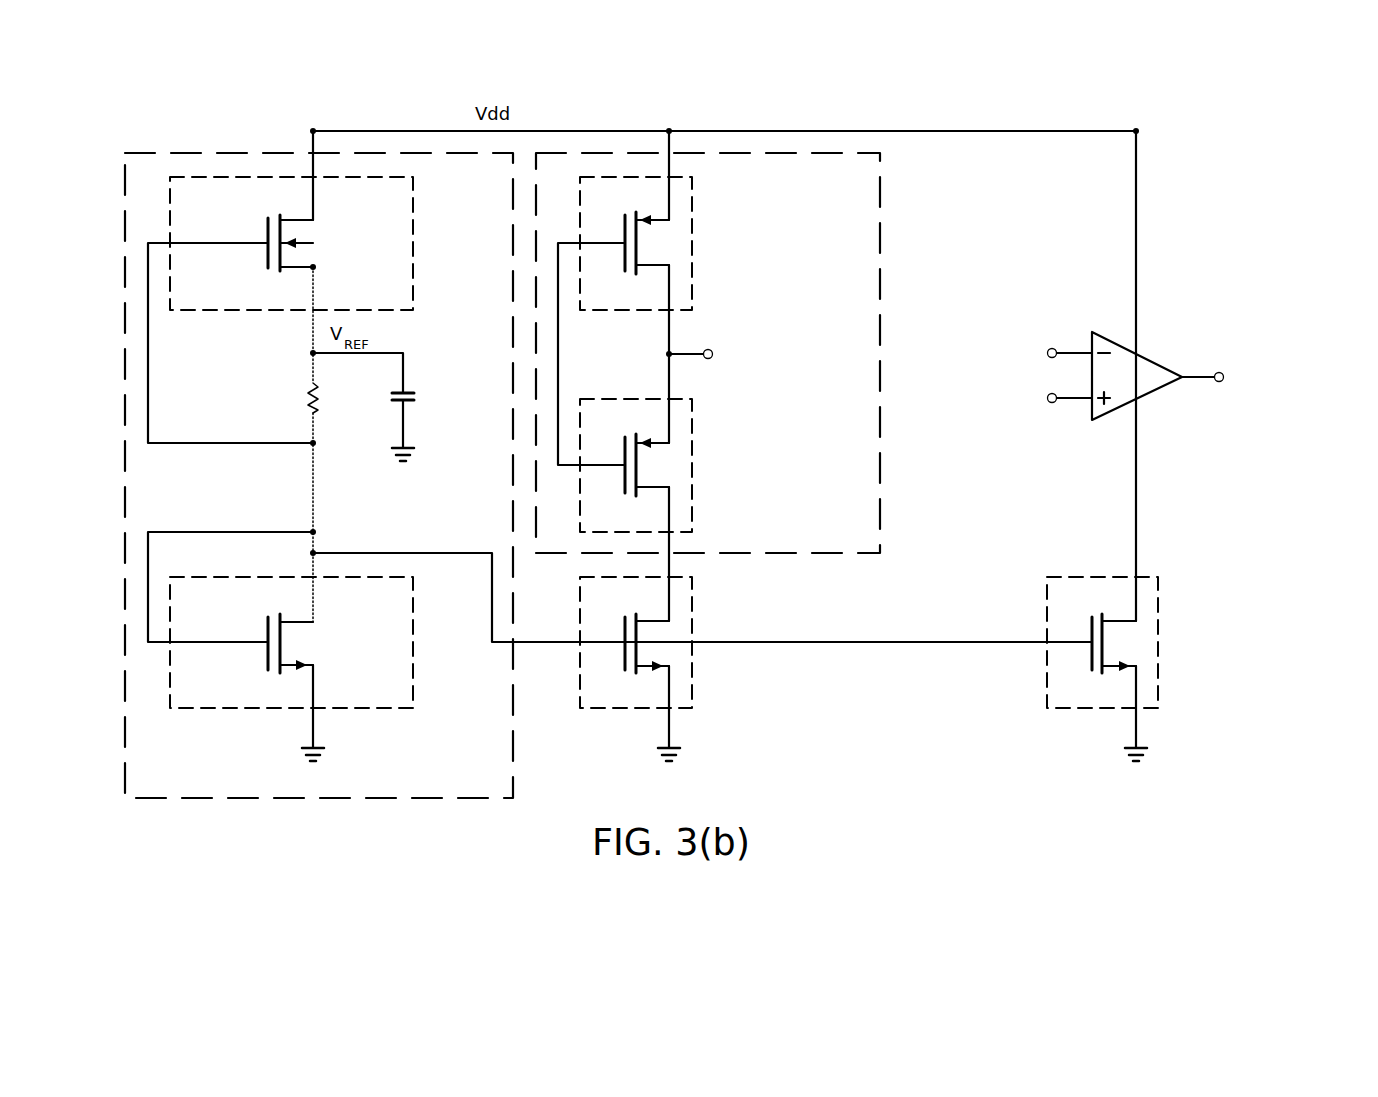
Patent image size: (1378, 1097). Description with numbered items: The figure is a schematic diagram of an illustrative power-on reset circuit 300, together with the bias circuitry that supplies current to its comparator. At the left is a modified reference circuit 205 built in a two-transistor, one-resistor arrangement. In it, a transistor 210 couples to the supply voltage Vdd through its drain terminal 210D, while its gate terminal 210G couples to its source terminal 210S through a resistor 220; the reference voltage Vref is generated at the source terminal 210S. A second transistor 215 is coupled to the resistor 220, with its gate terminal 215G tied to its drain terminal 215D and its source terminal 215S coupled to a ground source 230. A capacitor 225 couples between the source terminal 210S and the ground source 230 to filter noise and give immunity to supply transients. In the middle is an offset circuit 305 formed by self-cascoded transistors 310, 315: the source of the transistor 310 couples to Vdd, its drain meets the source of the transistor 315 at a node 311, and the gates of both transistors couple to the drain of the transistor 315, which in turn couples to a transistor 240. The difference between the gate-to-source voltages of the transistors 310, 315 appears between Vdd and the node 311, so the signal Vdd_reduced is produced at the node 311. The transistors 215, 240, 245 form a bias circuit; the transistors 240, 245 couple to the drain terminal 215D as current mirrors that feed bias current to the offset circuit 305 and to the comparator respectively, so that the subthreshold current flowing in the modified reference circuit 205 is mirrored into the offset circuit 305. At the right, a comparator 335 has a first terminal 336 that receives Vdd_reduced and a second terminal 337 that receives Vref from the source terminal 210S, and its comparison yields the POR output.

The POR circuit 300 is at (818, 90).
The modified reference circuit 205 is at (112, 417).
The transistor 210 is at (324, 287).
The gate terminal 210G is at (266, 230).
The drain terminal 210D is at (305, 225).
The source terminal 210S is at (305, 270).
The transistor 215 is at (324, 620).
The gate terminal 215G is at (266, 655).
The drain terminal 215D is at (305, 627).
The source terminal 215S is at (290, 660).
The resistor 220 is at (310, 395).
The capacitor 225 is at (415, 393).
The ground source 230 is at (410, 455).
The offset circuit 305 is at (890, 268).
The transistor 310 is at (705, 230).
The node 311 is at (665, 353).
The transistor 315 is at (705, 480).
The transistor 240 is at (705, 660).
The transistor 245 is at (1172, 660).
The comparator 335 is at (1127, 379).
The first terminal 336 is at (1070, 348).
The second terminal 337 is at (1075, 405).